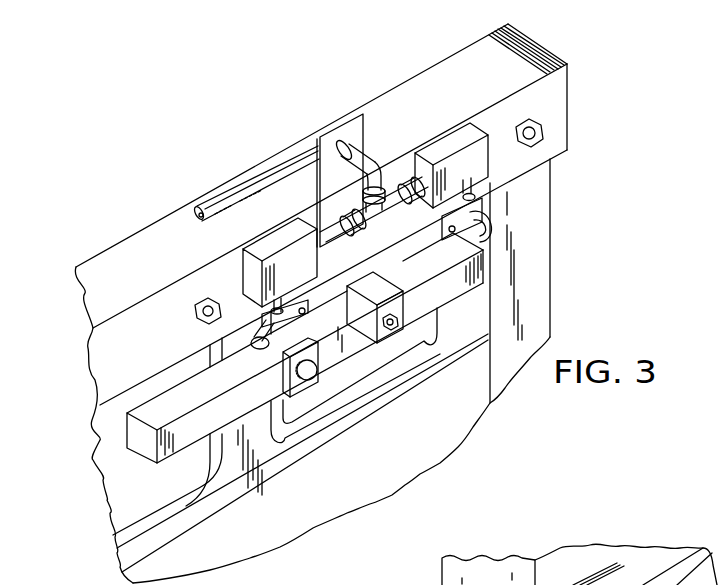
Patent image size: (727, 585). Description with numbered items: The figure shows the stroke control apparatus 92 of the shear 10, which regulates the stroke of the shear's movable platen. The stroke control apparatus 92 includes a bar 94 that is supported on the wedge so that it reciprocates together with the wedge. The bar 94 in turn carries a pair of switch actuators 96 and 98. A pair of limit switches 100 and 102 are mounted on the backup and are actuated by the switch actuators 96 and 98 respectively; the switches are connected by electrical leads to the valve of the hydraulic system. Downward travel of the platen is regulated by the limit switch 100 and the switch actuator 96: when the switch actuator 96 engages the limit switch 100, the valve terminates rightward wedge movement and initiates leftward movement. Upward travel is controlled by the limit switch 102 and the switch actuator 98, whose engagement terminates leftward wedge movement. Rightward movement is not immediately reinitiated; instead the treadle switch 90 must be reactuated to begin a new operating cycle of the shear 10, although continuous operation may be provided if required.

The shear 10 is at (143, 188).
The treadle switch 90 is at (392, 136).
The stroke control apparatus 92 is at (436, 277).
The bar 94 is at (398, 312).
The switch actuator 96 is at (297, 382).
The switch actuator 98 is at (463, 140).
The limit switch 100 is at (250, 270).
The limit switch 102 is at (260, 180).